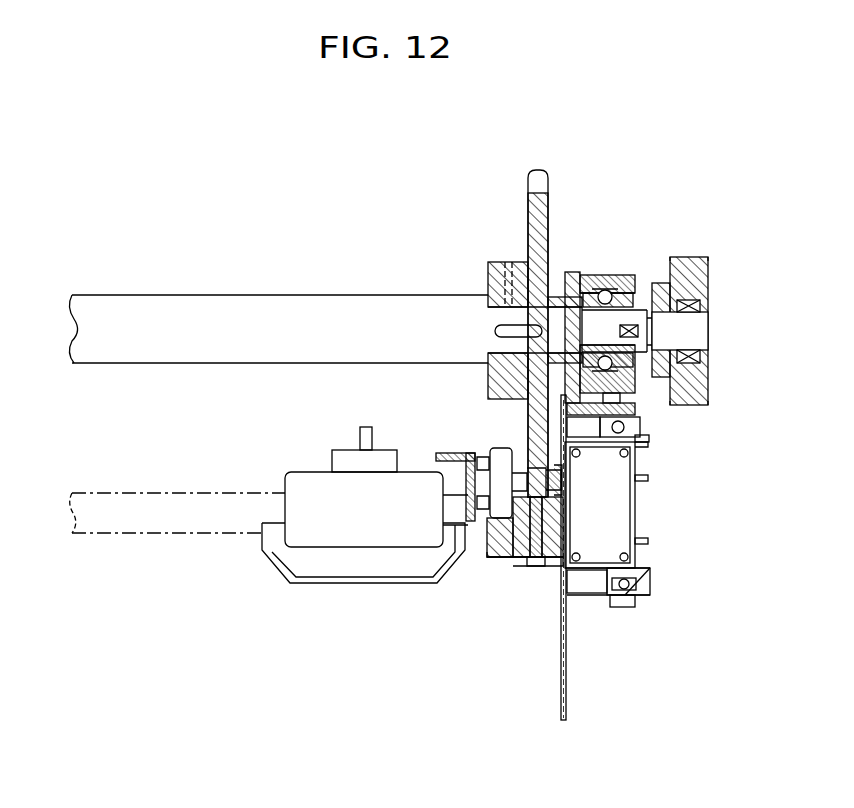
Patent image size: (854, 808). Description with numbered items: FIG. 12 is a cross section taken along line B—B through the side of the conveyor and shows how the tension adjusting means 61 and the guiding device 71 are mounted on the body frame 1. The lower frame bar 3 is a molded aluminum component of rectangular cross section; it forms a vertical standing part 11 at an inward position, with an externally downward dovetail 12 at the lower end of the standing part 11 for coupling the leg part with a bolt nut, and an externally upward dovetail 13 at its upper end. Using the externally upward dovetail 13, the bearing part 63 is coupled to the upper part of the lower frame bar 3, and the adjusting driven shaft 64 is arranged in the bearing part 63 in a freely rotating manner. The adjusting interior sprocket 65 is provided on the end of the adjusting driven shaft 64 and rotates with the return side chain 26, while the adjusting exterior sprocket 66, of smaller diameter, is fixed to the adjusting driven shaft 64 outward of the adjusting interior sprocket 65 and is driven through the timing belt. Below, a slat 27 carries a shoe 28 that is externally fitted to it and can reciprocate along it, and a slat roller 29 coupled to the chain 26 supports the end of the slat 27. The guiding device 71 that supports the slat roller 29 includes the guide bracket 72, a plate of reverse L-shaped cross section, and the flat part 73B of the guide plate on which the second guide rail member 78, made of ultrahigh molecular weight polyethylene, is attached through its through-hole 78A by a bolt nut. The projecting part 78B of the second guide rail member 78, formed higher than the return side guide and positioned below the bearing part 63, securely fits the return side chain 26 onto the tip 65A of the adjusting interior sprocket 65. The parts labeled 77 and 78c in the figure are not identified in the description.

The body frame 1 is at (661, 548).
The lower frame bar 3 is at (636, 512).
The standing part 11 is at (569, 482).
The externally downward dovetail 12 is at (645, 578).
The externally upward dovetail 13 is at (628, 422).
The chain 26 is at (527, 468).
The slat 27 is at (187, 518).
The shoe 28 is at (322, 586).
The slat roller 29 is at (496, 456).
The tension adjusting means 61 is at (670, 232).
The bearing part 63 is at (600, 267).
The adjusting driven shaft 64 is at (282, 312).
The adjusting interior sprocket 65 is at (548, 211).
The tip of the adjusting interior sprocket 65A is at (539, 177).
The adjusting exterior sprocket 66 is at (708, 289).
The guiding device 71 is at (600, 618).
The guide bracket 72 is at (566, 683).
The flat part 73B is at (515, 568).
The bolt 77 is at (534, 562).
The second guide rail member 78 is at (545, 549).
The through-hole 78A is at (567, 515).
The projecting part 78B is at (567, 506).
The holder block corner 78c is at (488, 552).